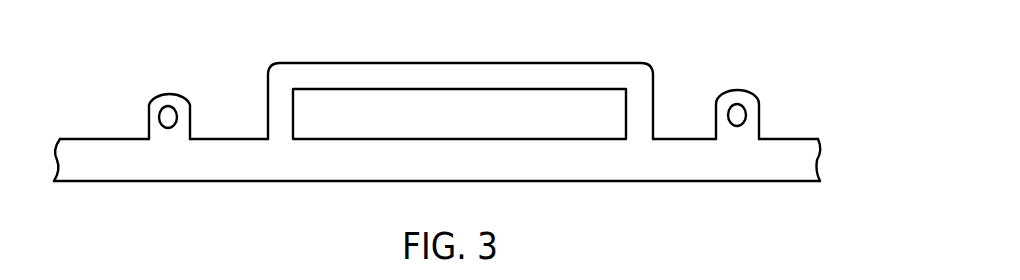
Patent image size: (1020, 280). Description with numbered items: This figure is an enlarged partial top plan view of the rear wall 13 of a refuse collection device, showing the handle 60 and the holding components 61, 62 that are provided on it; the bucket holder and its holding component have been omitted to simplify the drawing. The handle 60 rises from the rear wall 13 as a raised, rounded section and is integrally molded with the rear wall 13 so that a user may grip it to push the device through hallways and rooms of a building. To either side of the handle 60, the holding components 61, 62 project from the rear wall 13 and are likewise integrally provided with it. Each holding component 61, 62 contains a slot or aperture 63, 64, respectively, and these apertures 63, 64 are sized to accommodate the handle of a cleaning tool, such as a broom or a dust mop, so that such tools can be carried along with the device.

The rear wall 13 is at (225, 139).
The handle 60 is at (642, 82).
The holding component 61 is at (156, 96).
The holding component 62 is at (750, 93).
The aperture 63 is at (168, 128).
The aperture 64 is at (735, 127).